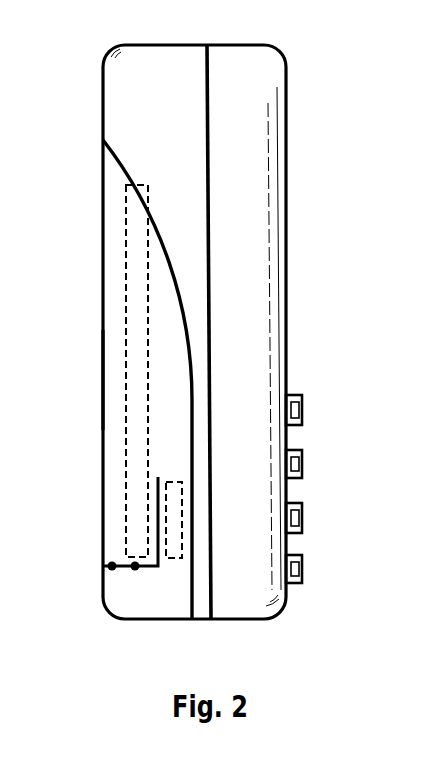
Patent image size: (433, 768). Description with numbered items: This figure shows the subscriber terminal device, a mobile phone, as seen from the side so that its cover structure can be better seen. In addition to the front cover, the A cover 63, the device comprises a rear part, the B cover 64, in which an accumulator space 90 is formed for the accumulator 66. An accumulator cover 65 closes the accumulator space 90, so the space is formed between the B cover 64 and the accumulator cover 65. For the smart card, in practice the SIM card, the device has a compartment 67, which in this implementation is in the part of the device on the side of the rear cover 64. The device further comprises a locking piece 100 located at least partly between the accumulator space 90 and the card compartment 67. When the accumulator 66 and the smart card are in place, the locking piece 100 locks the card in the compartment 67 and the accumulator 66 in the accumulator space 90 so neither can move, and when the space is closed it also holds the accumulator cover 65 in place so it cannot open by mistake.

The A cover 63 is at (264, 198).
The B cover 64 is at (113, 112).
The accumulator cover 65 is at (113, 377).
The accumulator 66 is at (124, 266).
The compartment 67 is at (178, 562).
The accumulator space 90 is at (124, 235).
The locking piece 100 is at (148, 570).